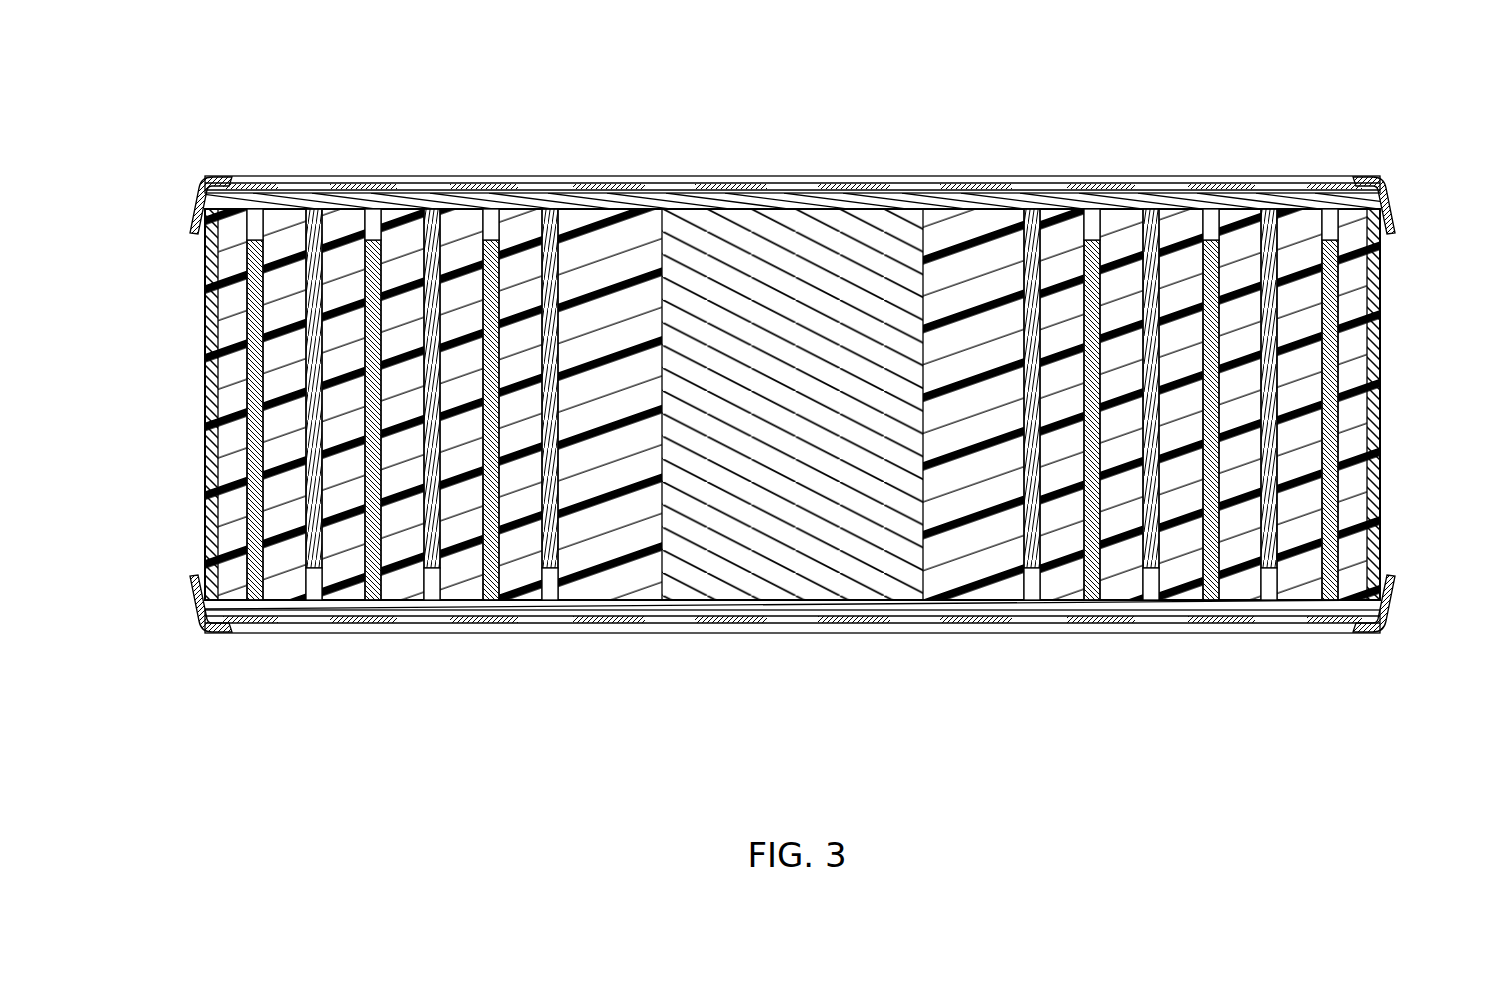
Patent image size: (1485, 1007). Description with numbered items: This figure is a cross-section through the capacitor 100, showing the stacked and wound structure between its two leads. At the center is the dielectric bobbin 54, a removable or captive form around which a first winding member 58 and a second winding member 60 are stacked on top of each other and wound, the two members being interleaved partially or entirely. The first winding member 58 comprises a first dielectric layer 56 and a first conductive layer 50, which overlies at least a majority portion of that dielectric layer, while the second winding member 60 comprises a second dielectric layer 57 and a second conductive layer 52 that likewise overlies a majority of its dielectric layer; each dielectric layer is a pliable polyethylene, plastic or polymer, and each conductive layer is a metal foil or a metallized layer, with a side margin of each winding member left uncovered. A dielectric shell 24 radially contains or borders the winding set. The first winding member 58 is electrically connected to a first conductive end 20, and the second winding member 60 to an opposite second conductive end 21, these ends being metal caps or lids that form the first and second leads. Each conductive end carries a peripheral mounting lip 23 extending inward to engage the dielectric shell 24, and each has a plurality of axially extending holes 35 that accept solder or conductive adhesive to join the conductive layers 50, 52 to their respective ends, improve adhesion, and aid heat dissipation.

The first conductive end 20 is at (612, 633).
The second conductive end 21 is at (236, 205).
The peripheral mounting lip 23 is at (192, 208).
The dielectric shell 24 is at (207, 368).
The axially extending holes 35 is at (306, 190).
The first conductive layer 50 is at (292, 510).
The second conductive layer 52 is at (350, 232).
The dielectric bobbin 54 is at (780, 305).
The first dielectric layer 56 is at (230, 232).
The second dielectric layer 57 is at (313, 590).
The first winding member 58 is at (255, 600).
The second winding member 60 is at (312, 262).
The capacitor 100 is at (766, 792).